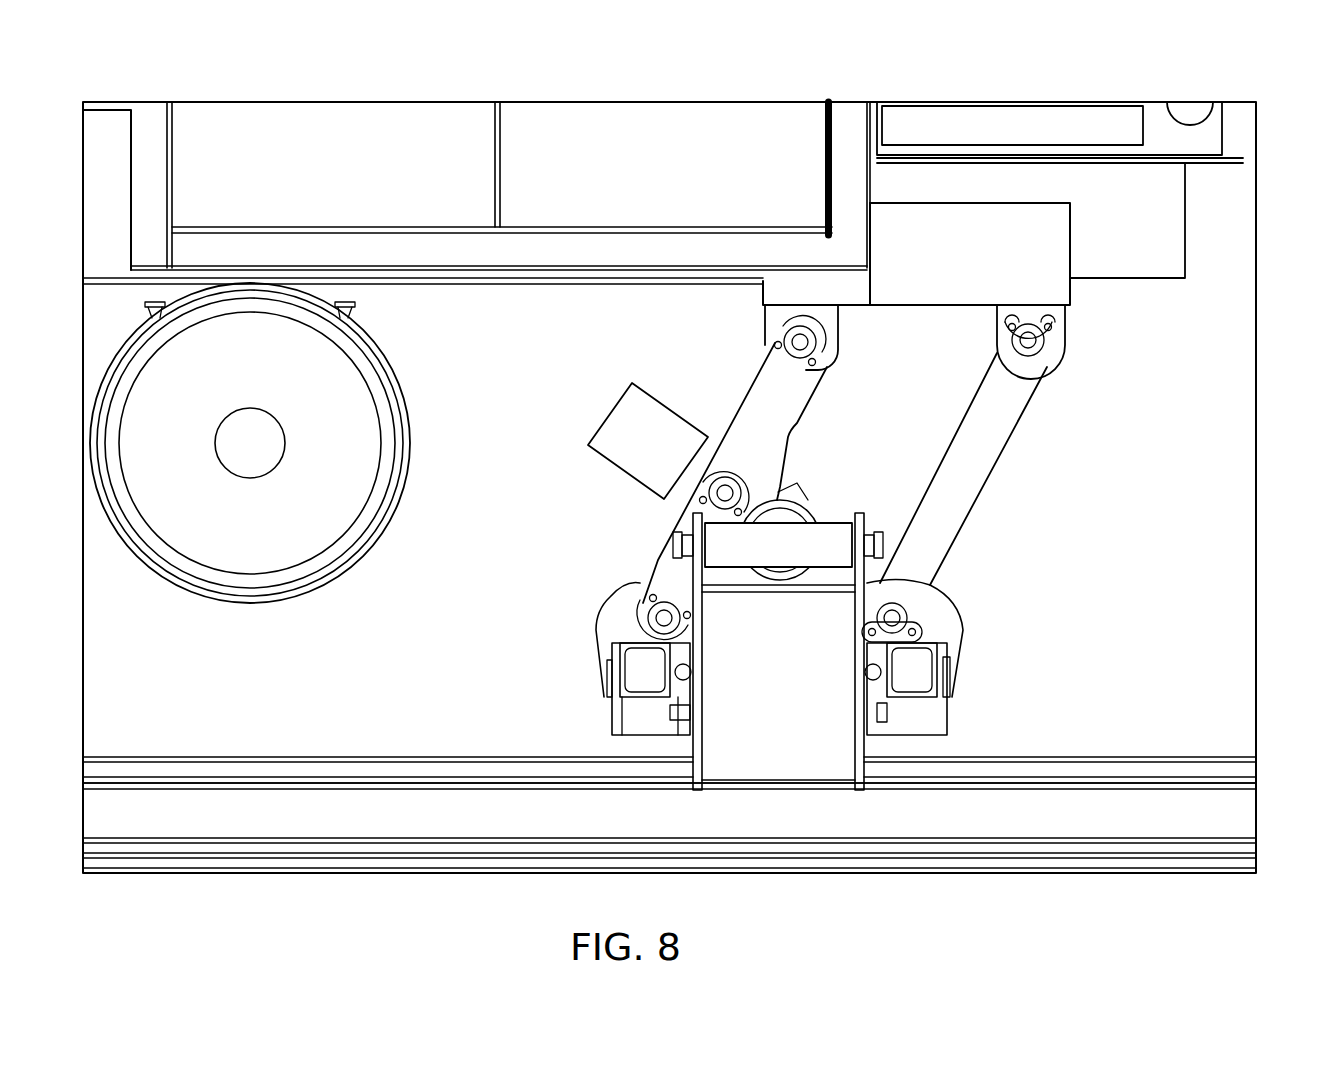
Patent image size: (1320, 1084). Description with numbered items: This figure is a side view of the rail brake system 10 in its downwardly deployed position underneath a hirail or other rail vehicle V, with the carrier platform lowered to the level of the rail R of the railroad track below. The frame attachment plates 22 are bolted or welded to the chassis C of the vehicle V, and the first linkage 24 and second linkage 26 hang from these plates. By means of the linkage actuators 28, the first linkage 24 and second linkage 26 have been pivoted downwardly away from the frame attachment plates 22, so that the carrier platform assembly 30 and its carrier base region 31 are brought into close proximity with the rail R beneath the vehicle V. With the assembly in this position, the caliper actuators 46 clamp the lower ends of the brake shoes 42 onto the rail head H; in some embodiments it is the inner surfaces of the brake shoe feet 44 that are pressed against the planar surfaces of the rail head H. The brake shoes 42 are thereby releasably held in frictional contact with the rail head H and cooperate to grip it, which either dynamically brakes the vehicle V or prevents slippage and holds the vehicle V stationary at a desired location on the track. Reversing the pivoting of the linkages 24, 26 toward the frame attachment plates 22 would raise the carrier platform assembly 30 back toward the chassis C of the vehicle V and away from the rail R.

The rail brake system 10 is at (1180, 596).
The frame attachment plates 22 is at (918, 232).
The first linkage 24 is at (760, 390).
The second linkage 26 is at (975, 460).
The linkage actuators 28 is at (622, 447).
The carrier platform assembly 30 is at (580, 690).
The carrier base region 31 is at (972, 709).
The brake shoes 42 is at (798, 748).
The brake shoe feet 44 is at (670, 774).
The caliper actuators 46 is at (800, 513).
The vehicle V is at (218, 128).
The chassis C is at (1147, 245).
The rail head H is at (1248, 768).
The rail R is at (1248, 818).